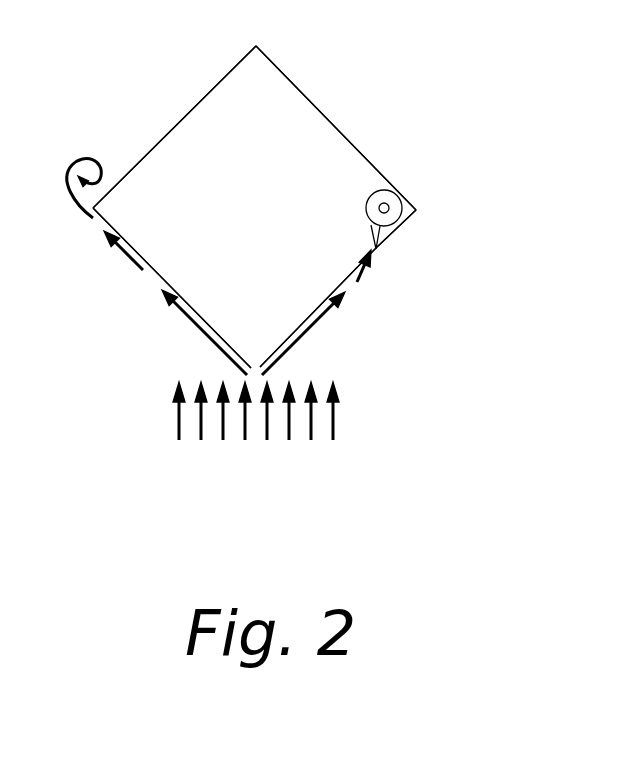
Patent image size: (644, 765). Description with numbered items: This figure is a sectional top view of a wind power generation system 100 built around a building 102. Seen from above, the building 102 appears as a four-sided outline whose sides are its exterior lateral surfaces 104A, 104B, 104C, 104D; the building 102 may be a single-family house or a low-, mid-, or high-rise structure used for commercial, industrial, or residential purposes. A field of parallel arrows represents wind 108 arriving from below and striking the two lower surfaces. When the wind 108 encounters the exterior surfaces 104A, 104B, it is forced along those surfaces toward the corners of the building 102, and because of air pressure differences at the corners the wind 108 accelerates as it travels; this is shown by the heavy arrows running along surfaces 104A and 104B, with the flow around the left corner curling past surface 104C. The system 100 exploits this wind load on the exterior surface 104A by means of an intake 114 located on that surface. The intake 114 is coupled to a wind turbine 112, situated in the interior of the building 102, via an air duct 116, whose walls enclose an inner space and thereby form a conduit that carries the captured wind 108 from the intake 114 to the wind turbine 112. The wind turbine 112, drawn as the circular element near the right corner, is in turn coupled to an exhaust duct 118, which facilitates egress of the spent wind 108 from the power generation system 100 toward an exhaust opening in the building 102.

The wind power generation system 100 is at (511, 98).
The building 102 is at (239, 130).
The exterior lateral surface 104A is at (285, 342).
The exterior lateral surface 104B is at (210, 330).
The exterior lateral surface 104C is at (200, 98).
The exterior lateral surface 104D is at (328, 117).
The wind 108 is at (282, 449).
The wind turbine 112 is at (392, 200).
The intake 114 is at (384, 264).
The air duct 116 is at (372, 232).
The exhaust duct 118 is at (389, 210).